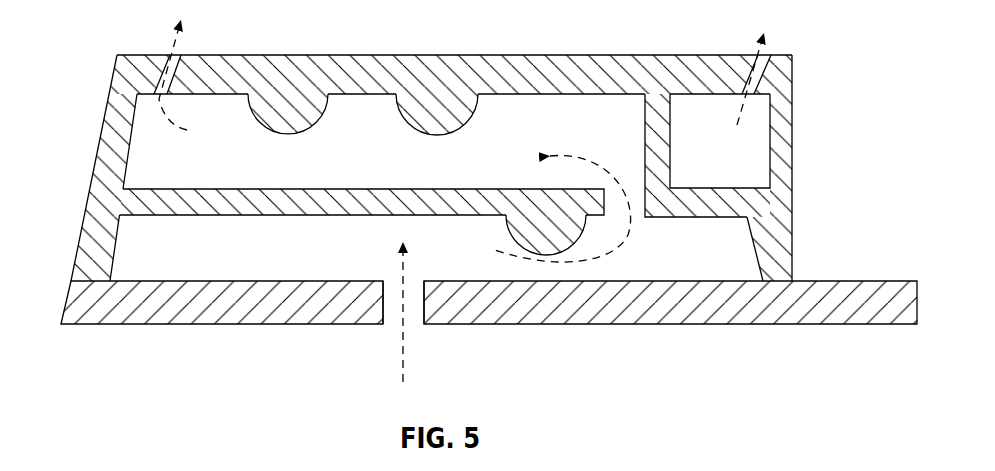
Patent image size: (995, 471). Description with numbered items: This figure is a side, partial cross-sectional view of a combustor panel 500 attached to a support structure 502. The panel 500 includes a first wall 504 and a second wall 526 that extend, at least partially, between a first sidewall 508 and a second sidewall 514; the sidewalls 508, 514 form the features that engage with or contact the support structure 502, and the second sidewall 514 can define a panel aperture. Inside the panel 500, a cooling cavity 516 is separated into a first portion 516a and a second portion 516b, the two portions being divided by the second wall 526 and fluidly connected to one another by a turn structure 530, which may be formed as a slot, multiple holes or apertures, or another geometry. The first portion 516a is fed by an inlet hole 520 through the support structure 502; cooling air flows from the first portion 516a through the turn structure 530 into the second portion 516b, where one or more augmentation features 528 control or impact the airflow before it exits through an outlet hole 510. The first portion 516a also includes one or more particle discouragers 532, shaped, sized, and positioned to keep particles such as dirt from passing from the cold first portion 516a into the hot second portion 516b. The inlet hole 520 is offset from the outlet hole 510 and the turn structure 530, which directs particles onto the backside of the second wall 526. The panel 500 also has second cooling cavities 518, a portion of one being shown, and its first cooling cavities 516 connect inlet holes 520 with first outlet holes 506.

The panel 500 is at (370, 45).
The support structure 502 is at (673, 312).
The first wall 504 is at (532, 78).
The first outlet hole 506 is at (780, 46).
The first sidewall 508 is at (786, 215).
The outlet hole 510 is at (186, 44).
The second sidewall 514 is at (100, 212).
The cooling cavity 516 is at (154, 146).
The first portion 516a is at (343, 263).
The second portion 516b is at (387, 181).
The second cooling cavity 518 is at (746, 171).
The inlet hole 520 is at (415, 335).
The second wall 526 is at (182, 207).
The augmentation feature 528 is at (274, 122).
The turn structure 530 is at (633, 236).
The particle discourager 532 is at (518, 228).